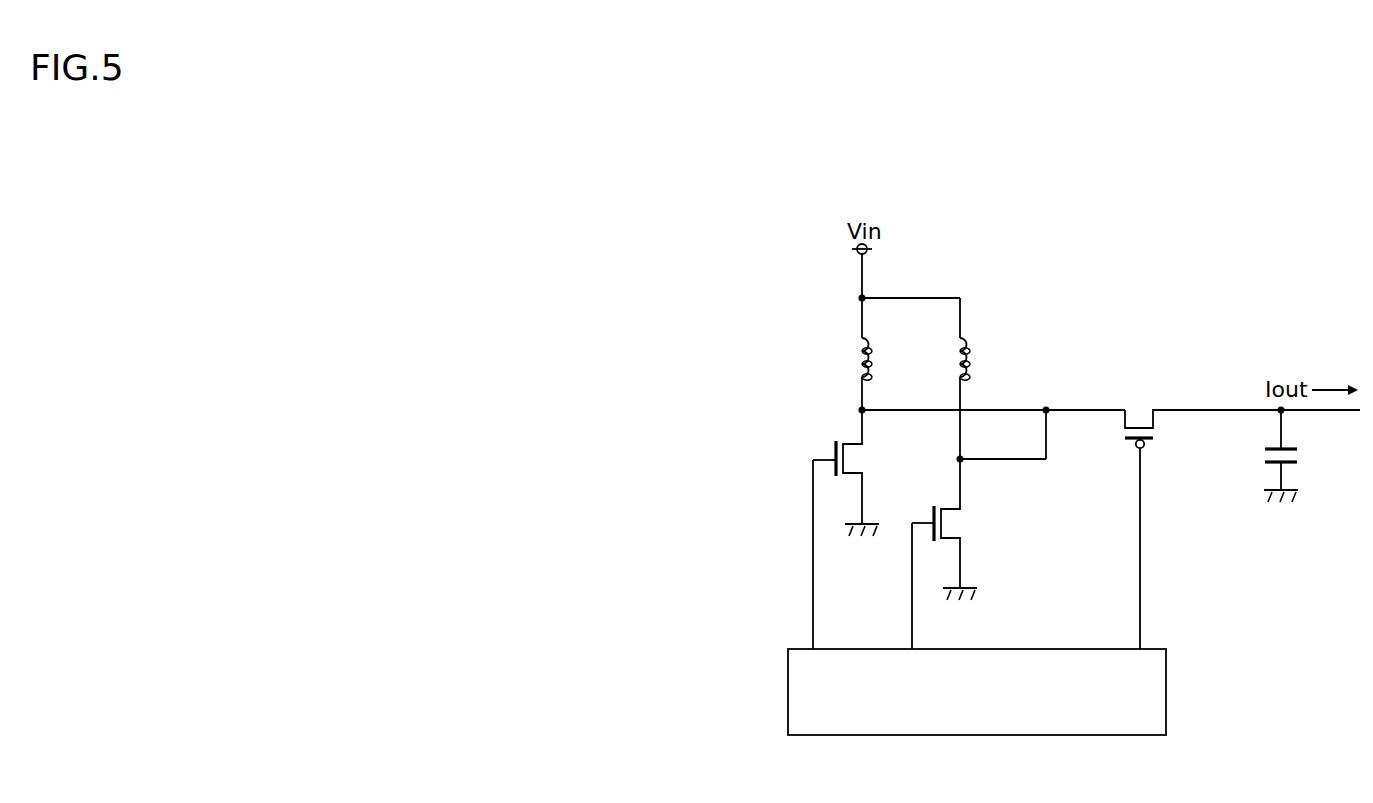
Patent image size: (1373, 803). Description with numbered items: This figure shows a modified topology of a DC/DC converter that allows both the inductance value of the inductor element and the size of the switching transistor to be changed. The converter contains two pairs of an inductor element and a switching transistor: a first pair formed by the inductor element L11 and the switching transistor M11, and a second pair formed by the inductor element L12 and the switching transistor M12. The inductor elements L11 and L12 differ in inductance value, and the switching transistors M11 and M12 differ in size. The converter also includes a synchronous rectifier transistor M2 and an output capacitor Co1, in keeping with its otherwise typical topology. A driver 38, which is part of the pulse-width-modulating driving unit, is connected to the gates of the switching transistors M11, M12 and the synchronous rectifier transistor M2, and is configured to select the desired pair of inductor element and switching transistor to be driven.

The inductor element L11 is at (879, 357).
The inductor element L12 is at (976, 357).
The switching transistor M11 is at (879, 458).
The switching transistor M12 is at (966, 523).
The synchronous rectifier transistor M2 is at (1158, 433).
The output capacitor Co1 is at (1303, 455).
The driver 38 is at (1033, 736).